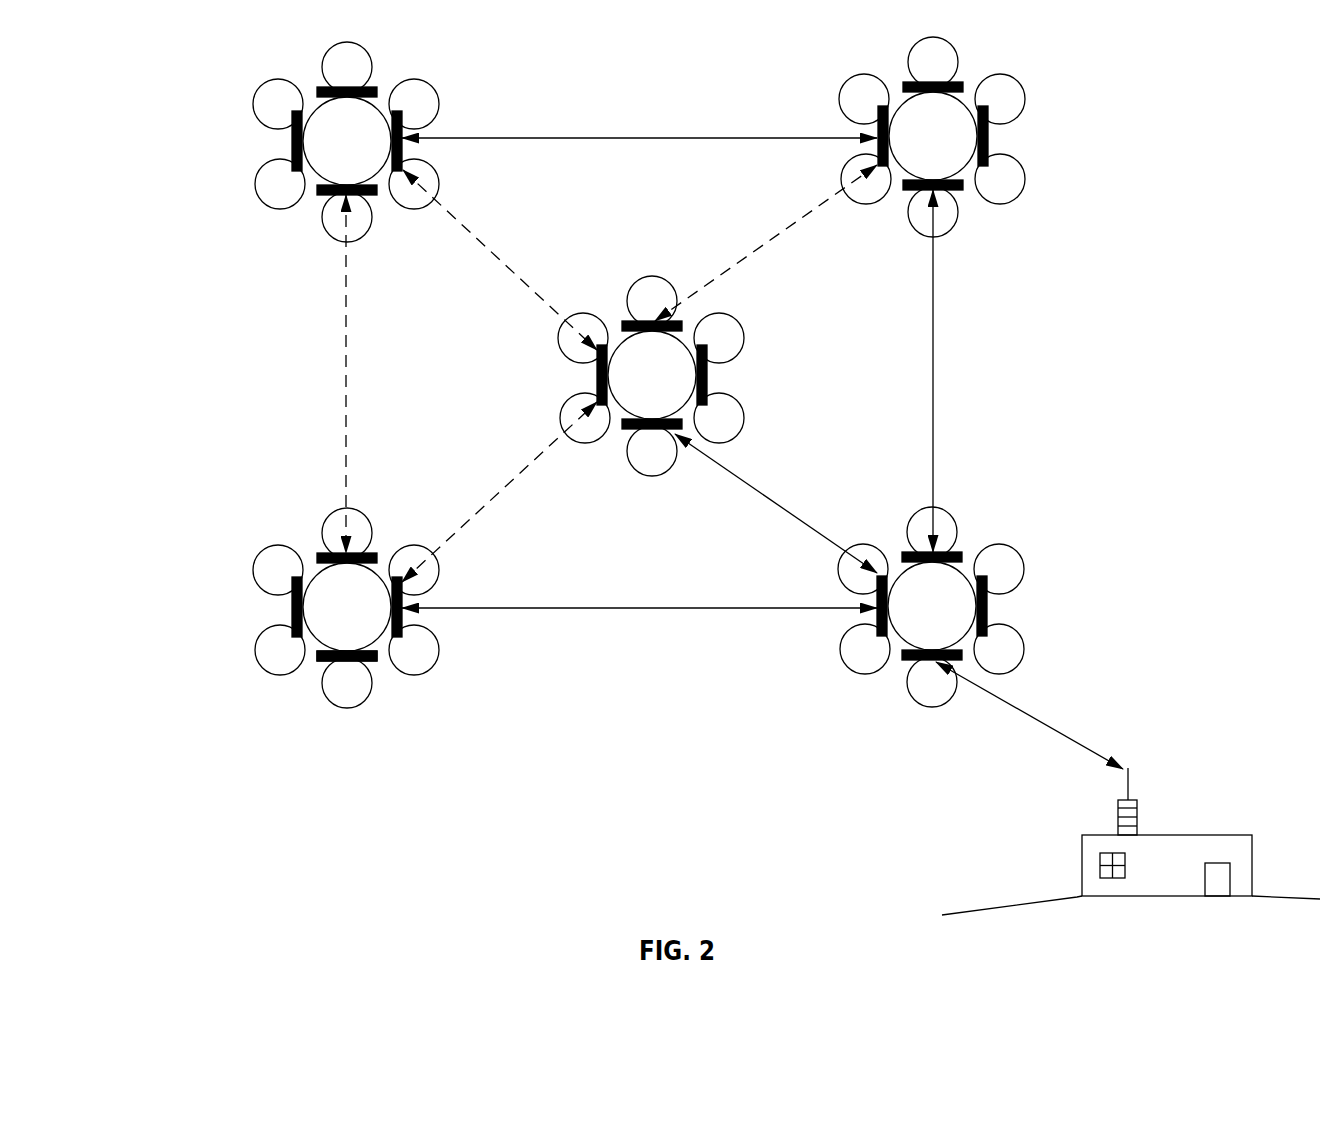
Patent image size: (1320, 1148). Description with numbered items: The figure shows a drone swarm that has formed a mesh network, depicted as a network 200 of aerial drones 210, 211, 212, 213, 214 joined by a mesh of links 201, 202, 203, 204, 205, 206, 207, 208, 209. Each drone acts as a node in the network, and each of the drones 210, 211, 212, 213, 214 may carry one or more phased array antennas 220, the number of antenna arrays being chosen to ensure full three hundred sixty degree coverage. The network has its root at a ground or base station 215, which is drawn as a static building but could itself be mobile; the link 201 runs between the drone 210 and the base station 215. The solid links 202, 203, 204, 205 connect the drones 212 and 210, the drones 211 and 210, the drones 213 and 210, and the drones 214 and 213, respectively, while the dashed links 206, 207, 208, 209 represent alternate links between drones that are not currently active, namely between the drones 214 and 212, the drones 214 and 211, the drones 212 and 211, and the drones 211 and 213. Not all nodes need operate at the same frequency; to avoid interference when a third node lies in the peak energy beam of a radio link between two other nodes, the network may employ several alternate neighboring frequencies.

The network 200 is at (168, 117).
The link 201 is at (1029, 715).
The link 202 is at (639, 624).
The link 203 is at (776, 503).
The link 204 is at (959, 371).
The link 205 is at (639, 126).
The alternate link 206 is at (323, 374).
The alternate link 207 is at (500, 260).
The alternate link 208 is at (499, 492).
The alternate link 209 is at (766, 243).
The aerial drone 210 is at (914, 617).
The aerial drone 211 is at (634, 386).
The aerial drone 212 is at (329, 618).
The aerial drone 213 is at (915, 147).
The aerial drone 214 is at (329, 152).
The ground or base station 215 is at (1131, 841).
The phased array antenna 220 is at (372, 661).